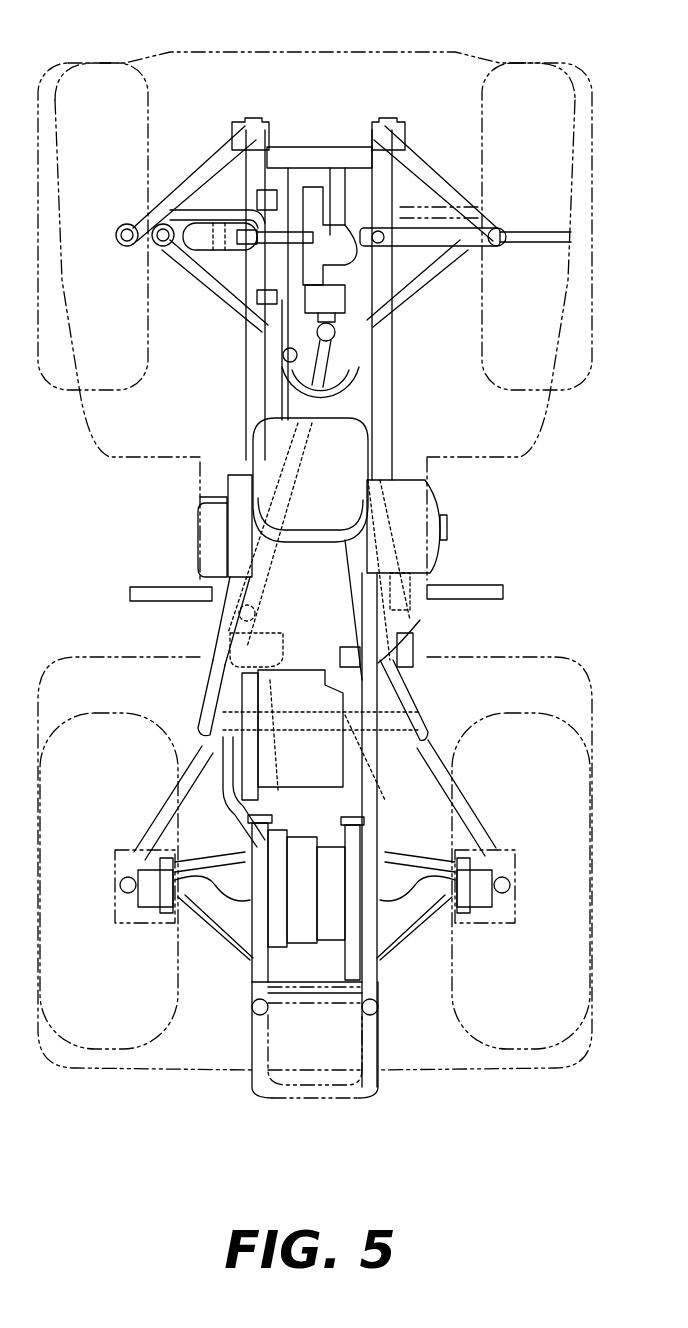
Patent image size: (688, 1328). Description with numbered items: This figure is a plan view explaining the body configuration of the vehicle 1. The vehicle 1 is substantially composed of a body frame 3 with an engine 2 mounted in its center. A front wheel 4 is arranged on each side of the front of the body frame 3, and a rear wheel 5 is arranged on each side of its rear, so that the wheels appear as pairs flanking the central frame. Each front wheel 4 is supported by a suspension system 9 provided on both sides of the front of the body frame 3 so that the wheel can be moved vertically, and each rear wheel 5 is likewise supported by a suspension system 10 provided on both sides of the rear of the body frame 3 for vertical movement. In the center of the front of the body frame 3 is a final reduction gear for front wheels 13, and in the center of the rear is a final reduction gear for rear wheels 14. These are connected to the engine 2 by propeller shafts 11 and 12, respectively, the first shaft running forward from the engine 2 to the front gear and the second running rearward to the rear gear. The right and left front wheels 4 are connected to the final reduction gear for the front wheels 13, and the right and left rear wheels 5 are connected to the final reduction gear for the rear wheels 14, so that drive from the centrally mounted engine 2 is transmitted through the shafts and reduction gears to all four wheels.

The vehicle 1 is at (445, 520).
The engine 2 is at (210, 503).
The body frame 3 is at (413, 633).
The front wheel 4 is at (85, 107).
The rear wheel 5 is at (100, 1040).
The suspension system 9 is at (222, 268).
The suspension system 10 is at (212, 923).
The propeller shaft 11 is at (285, 380).
The propeller shaft 12 is at (280, 732).
The final reduction gear for front wheels 13 is at (312, 200).
The final reduction gear for rear wheels 14 is at (300, 897).